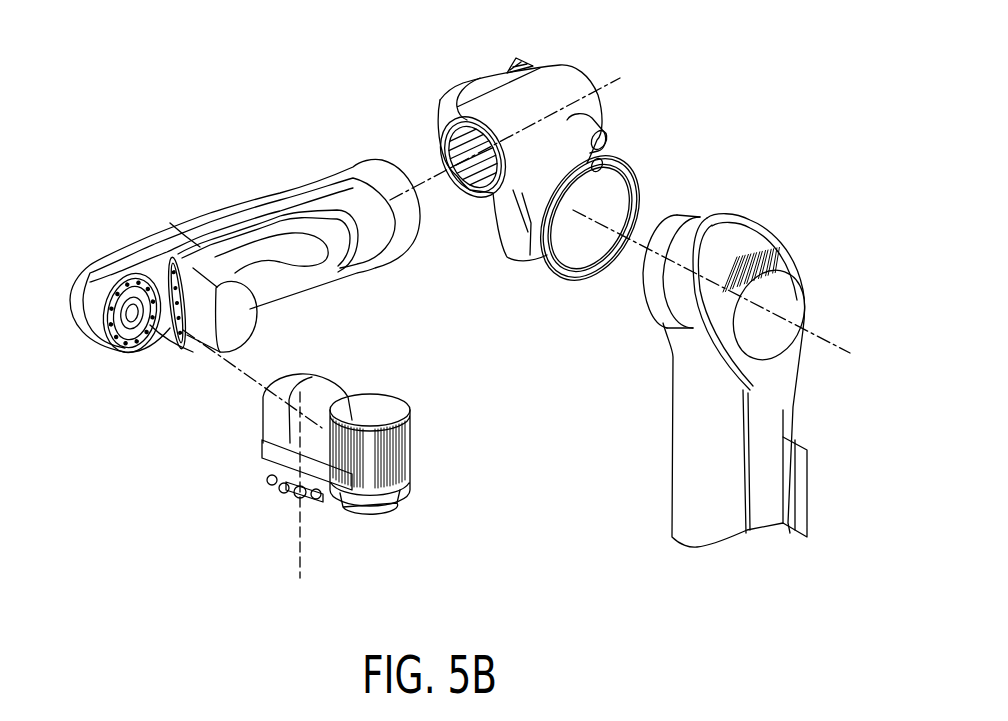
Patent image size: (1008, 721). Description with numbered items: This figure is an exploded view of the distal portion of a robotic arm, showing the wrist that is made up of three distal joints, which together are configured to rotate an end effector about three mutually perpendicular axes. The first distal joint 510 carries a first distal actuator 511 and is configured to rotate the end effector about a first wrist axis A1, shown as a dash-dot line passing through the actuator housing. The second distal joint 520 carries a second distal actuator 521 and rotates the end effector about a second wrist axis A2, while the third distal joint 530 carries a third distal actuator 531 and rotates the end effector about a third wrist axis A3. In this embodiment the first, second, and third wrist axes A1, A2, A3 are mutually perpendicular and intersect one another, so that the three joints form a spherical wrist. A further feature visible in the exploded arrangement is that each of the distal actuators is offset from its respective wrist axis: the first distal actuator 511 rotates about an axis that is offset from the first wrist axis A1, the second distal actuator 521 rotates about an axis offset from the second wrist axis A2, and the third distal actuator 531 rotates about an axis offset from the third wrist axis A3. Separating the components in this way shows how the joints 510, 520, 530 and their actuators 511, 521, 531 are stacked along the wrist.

The first distal joint 510 is at (652, 132).
The first distal actuator 511 is at (462, 92).
The second distal joint 520 is at (158, 150).
The second distal actuator 521 is at (240, 315).
The third distal joint 530 is at (217, 450).
The third distal actuator 531 is at (395, 393).
The first wrist axis A1 is at (420, 162).
The second wrist axis A2 is at (165, 373).
The third wrist axis A3 is at (282, 552).